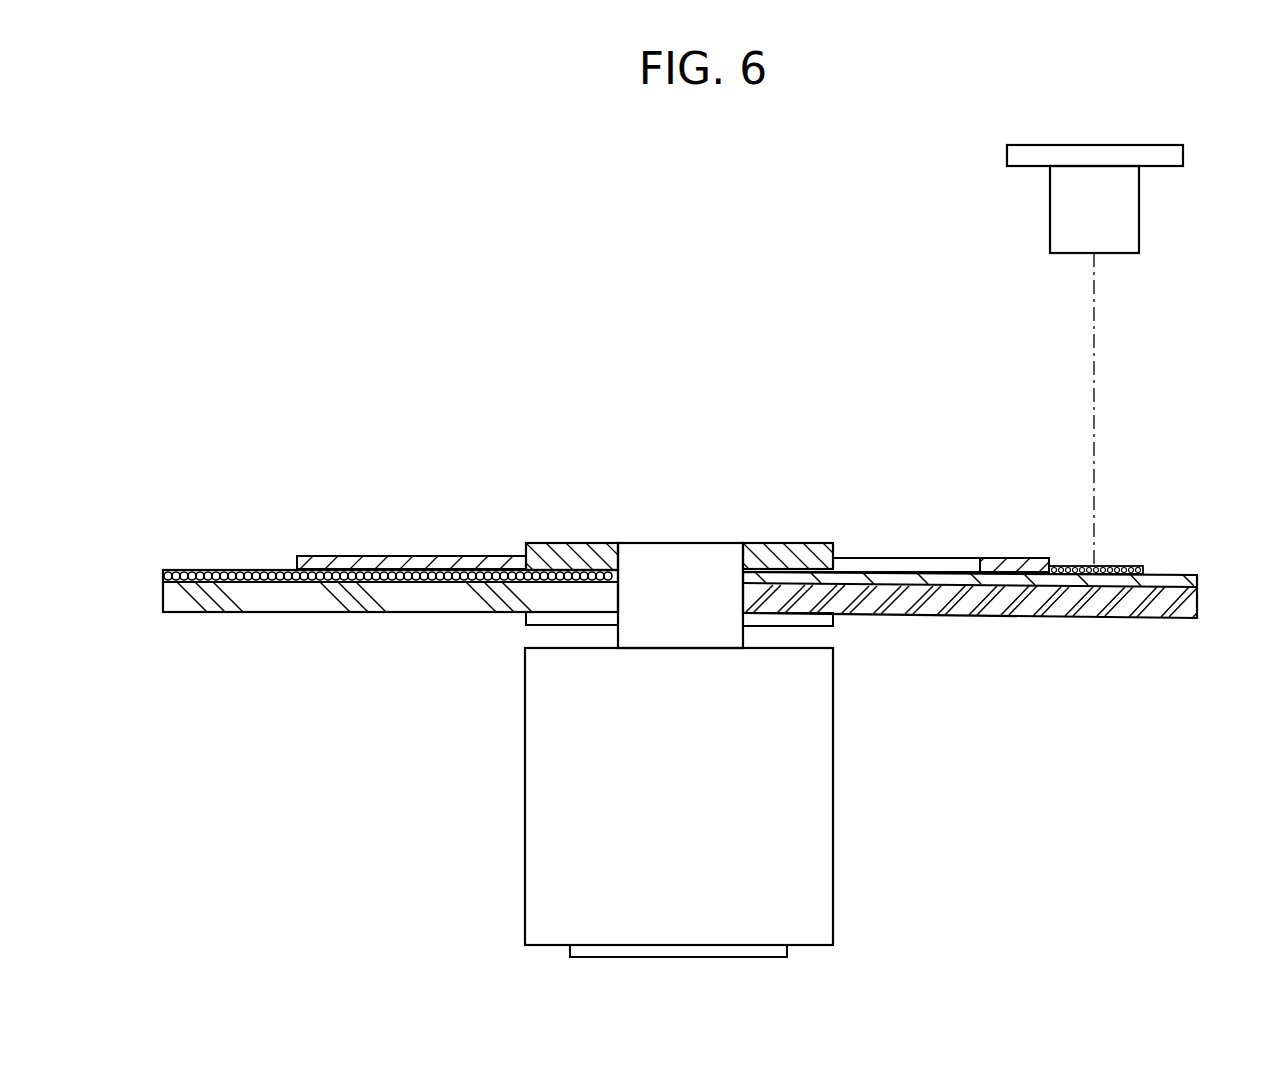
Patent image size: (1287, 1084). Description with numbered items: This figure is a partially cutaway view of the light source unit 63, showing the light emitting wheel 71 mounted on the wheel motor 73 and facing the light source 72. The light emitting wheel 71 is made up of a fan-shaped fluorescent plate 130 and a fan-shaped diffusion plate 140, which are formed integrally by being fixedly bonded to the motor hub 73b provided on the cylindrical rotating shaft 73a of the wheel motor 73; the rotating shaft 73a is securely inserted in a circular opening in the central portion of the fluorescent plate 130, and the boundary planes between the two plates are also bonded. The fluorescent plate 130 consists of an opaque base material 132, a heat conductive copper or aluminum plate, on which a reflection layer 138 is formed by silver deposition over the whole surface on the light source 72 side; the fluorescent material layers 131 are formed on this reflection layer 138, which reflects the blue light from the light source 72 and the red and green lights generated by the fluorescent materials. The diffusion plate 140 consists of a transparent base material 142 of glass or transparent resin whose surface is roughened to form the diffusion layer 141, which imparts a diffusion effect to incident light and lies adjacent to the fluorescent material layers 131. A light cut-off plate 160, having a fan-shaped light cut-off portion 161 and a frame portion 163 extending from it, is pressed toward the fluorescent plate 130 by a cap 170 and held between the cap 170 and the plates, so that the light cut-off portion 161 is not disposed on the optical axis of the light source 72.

The sensor assembly 63 is at (360, 388).
The light emitting wheel 71 is at (1203, 628).
The light source 72 is at (1070, 207).
The wheel motor 73 is at (632, 715).
The rotating shaft 73a is at (690, 570).
The motor hub 73b is at (538, 620).
The fluorescent plate 130 is at (985, 628).
The fluorescent material layers 131 is at (1126, 565).
The opaque base material 132 is at (1094, 602).
The reflection layer 138 is at (1005, 582).
The diffusion plate 140 is at (210, 625).
The diffusion layer 141 is at (268, 568).
The transparent base material 142 is at (291, 598).
The light cut-off plate 160 is at (928, 550).
The light cut-off portion 161 is at (405, 565).
The frame portion 163 is at (868, 558).
The cap 170 is at (575, 535).